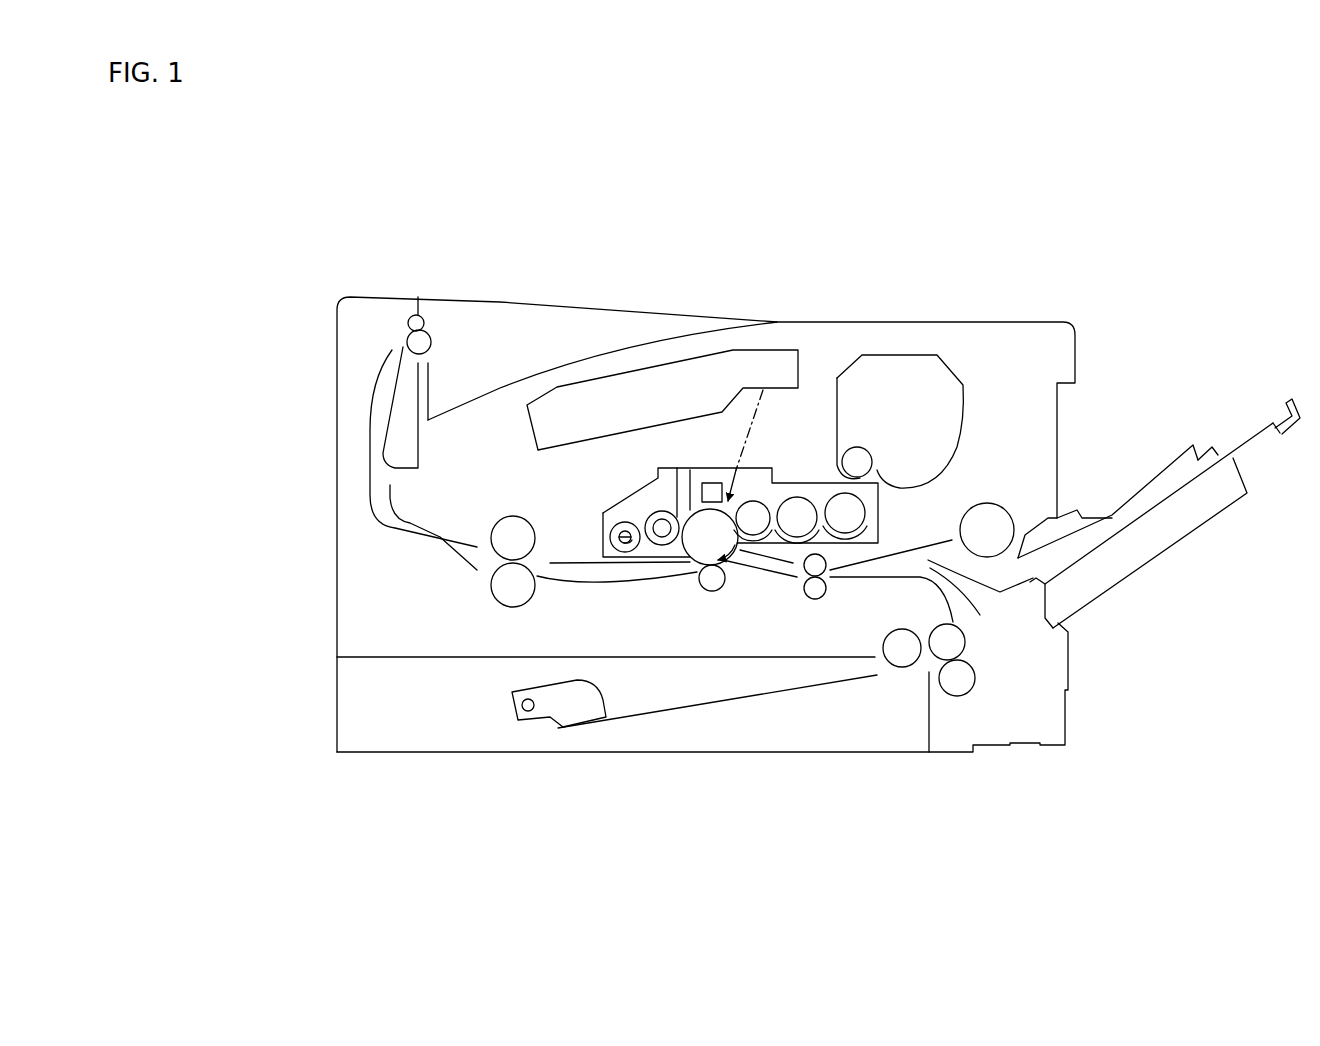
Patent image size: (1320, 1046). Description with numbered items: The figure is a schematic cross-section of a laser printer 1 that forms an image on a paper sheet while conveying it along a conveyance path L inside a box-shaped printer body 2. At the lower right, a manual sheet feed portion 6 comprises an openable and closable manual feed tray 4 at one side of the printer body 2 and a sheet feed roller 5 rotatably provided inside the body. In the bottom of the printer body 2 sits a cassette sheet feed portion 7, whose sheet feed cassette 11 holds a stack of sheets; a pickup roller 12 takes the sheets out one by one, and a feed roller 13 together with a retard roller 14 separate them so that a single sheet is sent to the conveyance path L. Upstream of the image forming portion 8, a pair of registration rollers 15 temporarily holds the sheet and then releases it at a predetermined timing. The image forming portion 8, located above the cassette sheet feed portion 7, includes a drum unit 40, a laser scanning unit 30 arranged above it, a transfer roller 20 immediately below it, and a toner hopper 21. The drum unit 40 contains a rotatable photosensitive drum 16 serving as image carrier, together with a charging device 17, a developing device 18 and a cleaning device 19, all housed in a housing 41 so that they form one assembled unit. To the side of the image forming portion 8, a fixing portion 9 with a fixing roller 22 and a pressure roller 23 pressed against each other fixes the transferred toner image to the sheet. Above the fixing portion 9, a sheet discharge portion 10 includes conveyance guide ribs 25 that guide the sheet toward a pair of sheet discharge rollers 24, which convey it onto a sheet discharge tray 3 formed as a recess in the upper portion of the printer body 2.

The laser printer 1 is at (752, 153).
The printer body 2 is at (337, 540).
The sheet discharge tray 3 is at (513, 385).
The manual feed tray 4 is at (1240, 445).
The sheet feed roller 5 is at (993, 503).
The manual sheet feed portion 6 is at (1161, 393).
The cassette sheet feed portion 7 is at (1000, 652).
The image forming portion 8 is at (779, 456).
The fixing portion 9 is at (476, 583).
The sheet discharge portion 10 is at (381, 321).
The sheet feed cassette 11 is at (790, 690).
The pickup roller 12 is at (905, 662).
The feed roller 13 is at (958, 640).
The retard roller 14 is at (967, 686).
The registration rollers 15 is at (820, 578).
The photosensitive drum 16 is at (732, 563).
The charging device 17 is at (712, 481).
The developing device 18 is at (873, 521).
The cleaning device 19 is at (636, 519).
The transfer roller 20 is at (718, 591).
The toner hopper 21 is at (903, 360).
The fixing roller 22 is at (513, 516).
The pressure roller 23 is at (498, 602).
The sheet discharge rollers 24 is at (427, 337).
The conveyance guide ribs 25 is at (418, 455).
The laser scanning unit 30 is at (645, 375).
The drum unit 40 is at (677, 466).
The housing 41 is at (600, 537).
The conveyance path L is at (603, 583).